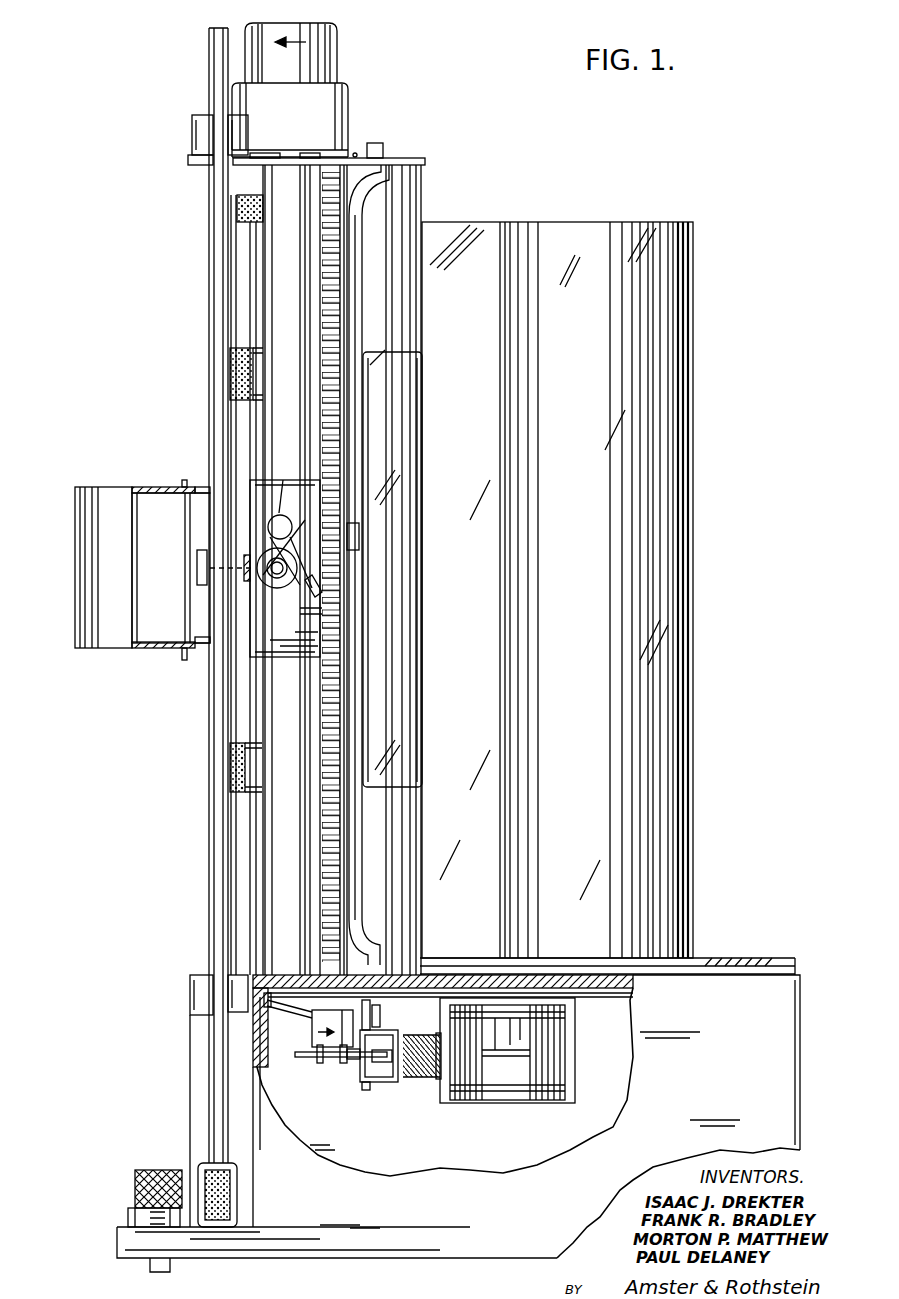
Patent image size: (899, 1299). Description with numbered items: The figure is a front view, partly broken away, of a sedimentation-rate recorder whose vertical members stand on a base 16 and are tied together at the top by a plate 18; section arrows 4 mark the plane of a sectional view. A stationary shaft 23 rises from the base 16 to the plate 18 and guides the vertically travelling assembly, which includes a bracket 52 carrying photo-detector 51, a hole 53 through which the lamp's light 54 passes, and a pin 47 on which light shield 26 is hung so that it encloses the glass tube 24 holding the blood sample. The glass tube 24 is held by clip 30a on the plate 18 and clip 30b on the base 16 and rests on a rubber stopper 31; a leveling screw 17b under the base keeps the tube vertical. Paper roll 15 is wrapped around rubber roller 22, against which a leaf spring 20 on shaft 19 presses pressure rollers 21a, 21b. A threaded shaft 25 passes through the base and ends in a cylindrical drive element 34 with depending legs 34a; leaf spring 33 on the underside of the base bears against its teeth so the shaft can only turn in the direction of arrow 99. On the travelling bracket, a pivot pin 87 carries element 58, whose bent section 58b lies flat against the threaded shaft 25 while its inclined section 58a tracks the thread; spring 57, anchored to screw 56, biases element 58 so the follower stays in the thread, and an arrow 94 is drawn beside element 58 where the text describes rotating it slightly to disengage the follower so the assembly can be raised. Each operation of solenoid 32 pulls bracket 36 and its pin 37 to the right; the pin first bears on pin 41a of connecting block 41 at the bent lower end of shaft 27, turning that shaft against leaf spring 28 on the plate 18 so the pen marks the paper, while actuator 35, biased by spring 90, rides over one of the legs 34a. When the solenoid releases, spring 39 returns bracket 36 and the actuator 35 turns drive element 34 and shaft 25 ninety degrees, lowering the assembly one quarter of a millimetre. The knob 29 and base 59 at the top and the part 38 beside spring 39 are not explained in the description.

The section line 4- 4 is at (63, 527).
The paper roll 15 is at (700, 280).
The base 16 is at (792, 1020).
The leveling screw 17b is at (135, 1185).
The plate 18 is at (425, 160).
The shaft 19 is at (421, 216).
The leaf spring 20 is at (403, 408).
The pressure roller 21a is at (230, 368).
The pressure roller 21b is at (230, 780).
The rubber roller 22 is at (237, 206).
The stationary shaft 23 is at (297, 281).
The glass tube 24 is at (210, 835).
The threaded shaft 25 is at (322, 876).
The light shield 26 is at (116, 648).
The shaft 27 is at (355, 740).
The leaf spring 28 is at (356, 228).
The dial knob 29 is at (337, 46).
The clip 30a is at (192, 123).
The clip 30b is at (190, 990).
The rubber stopper 31 is at (237, 1212).
The solenoid 32 is at (520, 1100).
The leaf spring 33 is at (300, 978).
The drive element 34 is at (316, 1056).
The depending legs 34a is at (343, 1065).
The actuator 35 is at (305, 1060).
The bracket 36 is at (380, 1085).
The pin 37 is at (366, 1092).
The spring 38 is at (415, 1080).
The spring 39 is at (433, 1082).
The connecting block 41 is at (375, 1015).
The pin 41a is at (382, 1020).
The pin 47 is at (185, 480).
The photo-detector 51 is at (197, 556).
The bracket 52 is at (205, 487).
The hole 53 is at (248, 578).
The light 54 is at (245, 588).
The screw 56 is at (272, 512).
The spring 57 is at (287, 545).
The element 58 is at (285, 568).
The inclined bent section 58a is at (335, 612).
The bent section 58b is at (358, 528).
The dial base 59 is at (348, 100).
The pivot pin 87 is at (279, 588).
The spring 90 is at (355, 1062).
The direction arrow 94 is at (371, 560).
The arrow 99 is at (312, 1040).